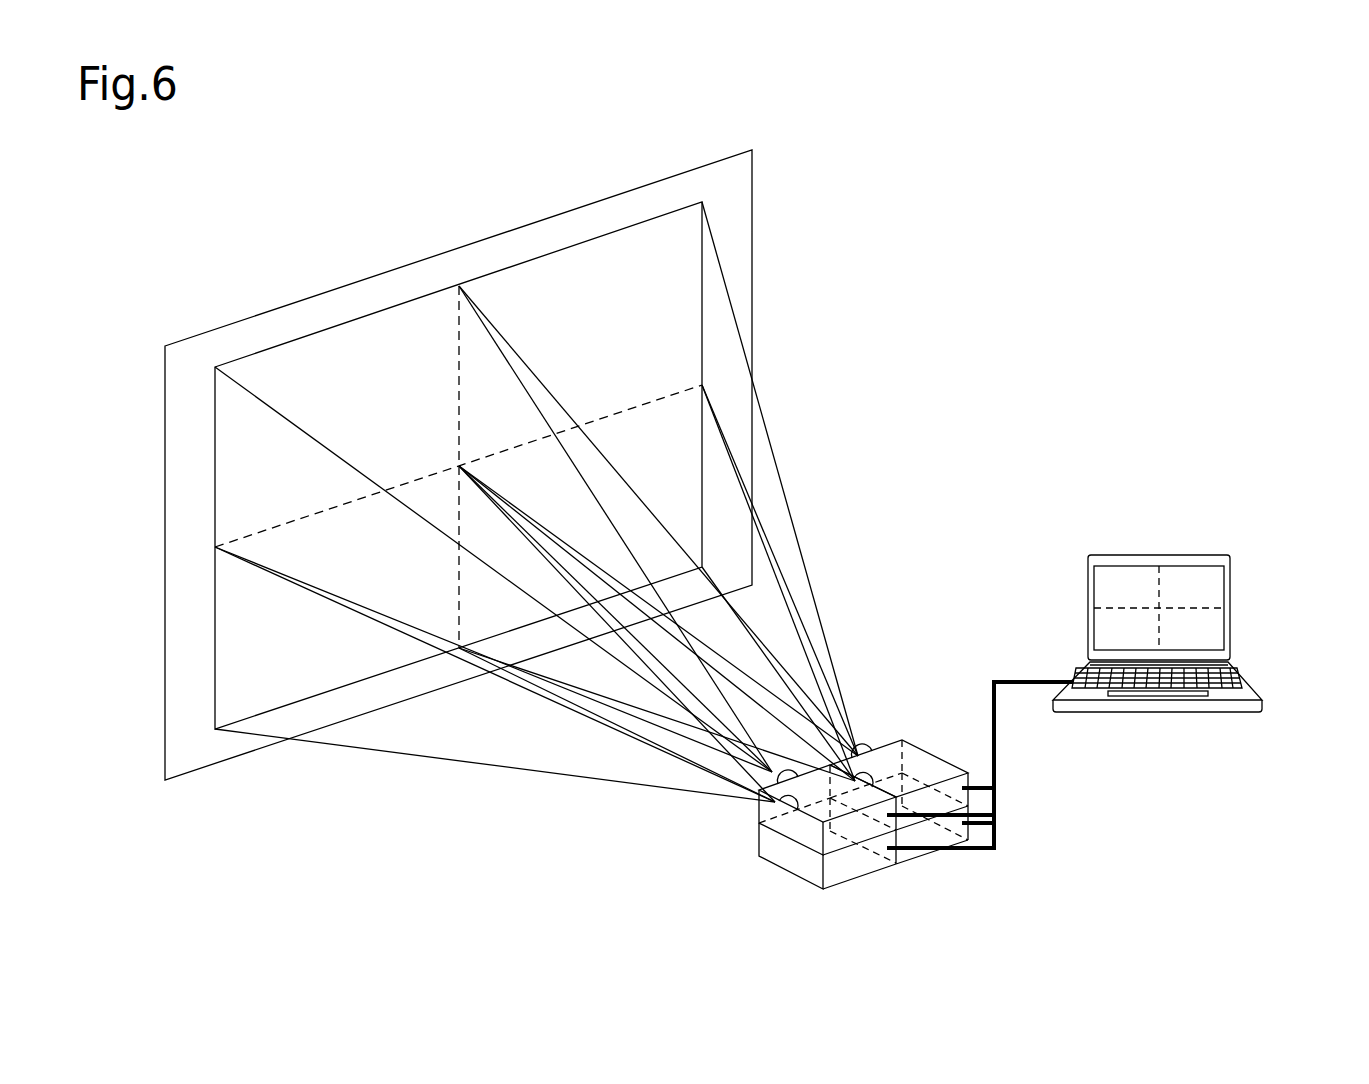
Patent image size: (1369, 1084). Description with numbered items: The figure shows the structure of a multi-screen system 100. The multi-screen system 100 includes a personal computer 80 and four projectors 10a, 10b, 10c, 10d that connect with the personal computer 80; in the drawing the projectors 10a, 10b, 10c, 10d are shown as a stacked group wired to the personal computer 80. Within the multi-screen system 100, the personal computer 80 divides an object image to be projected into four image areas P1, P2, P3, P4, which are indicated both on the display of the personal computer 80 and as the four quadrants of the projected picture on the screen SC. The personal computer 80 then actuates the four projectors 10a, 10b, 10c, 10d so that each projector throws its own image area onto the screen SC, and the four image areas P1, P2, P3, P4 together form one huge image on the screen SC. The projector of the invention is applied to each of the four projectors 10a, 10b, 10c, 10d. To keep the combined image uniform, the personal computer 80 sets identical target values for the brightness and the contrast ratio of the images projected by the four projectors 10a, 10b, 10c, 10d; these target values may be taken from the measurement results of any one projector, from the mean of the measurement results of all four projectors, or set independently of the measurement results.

The multi-screen system 100 is at (1183, 253).
The screen SC is at (752, 232).
The image area P1 is at (493, 529).
The image area P2 is at (658, 479).
The image area P3 is at (495, 634).
The image area P4 is at (657, 583).
The projector 10a is at (757, 815).
The projector 10b is at (913, 745).
The projector 10c is at (848, 882).
The projector 10d is at (918, 857).
The personal computer 80 is at (1248, 683).